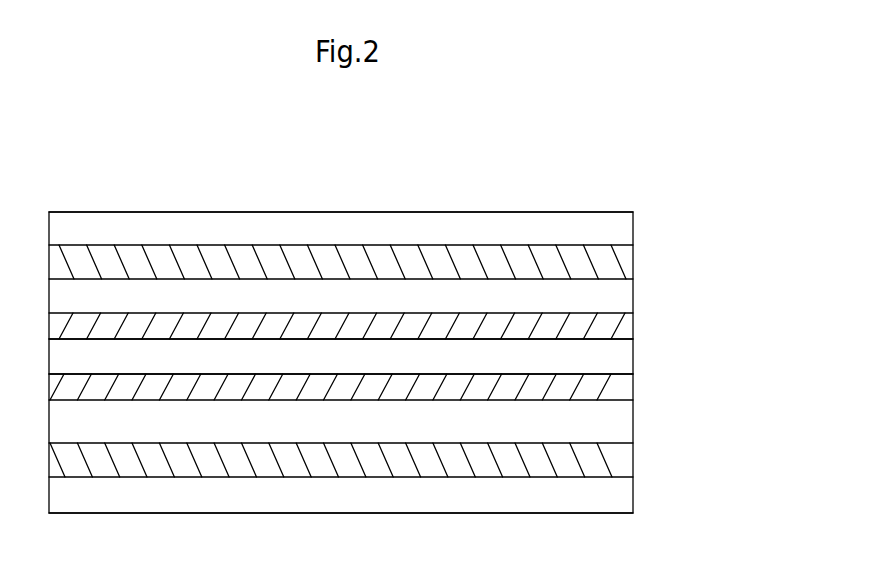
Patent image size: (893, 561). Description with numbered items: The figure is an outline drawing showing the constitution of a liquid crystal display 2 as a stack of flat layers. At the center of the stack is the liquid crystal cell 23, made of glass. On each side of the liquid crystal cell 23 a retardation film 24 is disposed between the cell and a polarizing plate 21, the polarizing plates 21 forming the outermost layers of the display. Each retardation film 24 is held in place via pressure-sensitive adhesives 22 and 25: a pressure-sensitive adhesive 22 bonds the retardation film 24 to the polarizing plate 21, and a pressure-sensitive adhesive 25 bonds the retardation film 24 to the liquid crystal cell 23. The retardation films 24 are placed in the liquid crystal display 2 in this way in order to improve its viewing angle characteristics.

The liquid crystal display 2 is at (539, 182).
The polarizing plate 21 is at (717, 458).
The pressure-sensitive adhesive 22 is at (717, 430).
The liquid crystal cell 23 is at (622, 362).
The retardation film 24 is at (717, 391).
The pressure-sensitive adhesive 25 is at (622, 331).